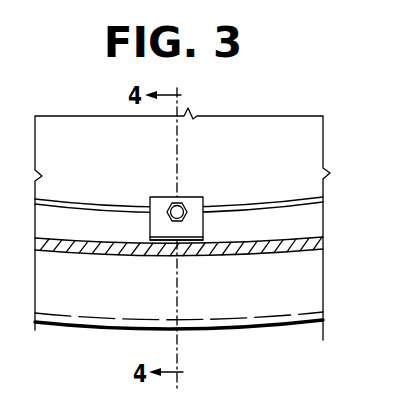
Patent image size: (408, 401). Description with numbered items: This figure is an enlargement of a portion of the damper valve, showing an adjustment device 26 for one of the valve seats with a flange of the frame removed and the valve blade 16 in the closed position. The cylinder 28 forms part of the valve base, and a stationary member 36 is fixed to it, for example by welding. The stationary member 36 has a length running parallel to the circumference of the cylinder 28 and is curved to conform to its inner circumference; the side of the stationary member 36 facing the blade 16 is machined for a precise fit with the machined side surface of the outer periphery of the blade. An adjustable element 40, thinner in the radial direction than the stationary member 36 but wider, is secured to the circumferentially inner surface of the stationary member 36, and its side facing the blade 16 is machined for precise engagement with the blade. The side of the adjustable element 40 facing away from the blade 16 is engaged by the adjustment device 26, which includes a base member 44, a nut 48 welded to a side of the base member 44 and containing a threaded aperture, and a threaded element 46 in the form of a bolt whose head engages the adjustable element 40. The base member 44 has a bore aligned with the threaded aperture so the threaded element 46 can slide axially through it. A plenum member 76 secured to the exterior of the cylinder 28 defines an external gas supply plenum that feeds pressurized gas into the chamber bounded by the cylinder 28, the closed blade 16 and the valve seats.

The valve blade 16 is at (254, 124).
The adjustment device 26 is at (149, 226).
The cylinder 28 is at (324, 241).
The stationary member 36 is at (83, 236).
The adjustable element 40 is at (218, 210).
The base member 44 is at (168, 232).
The threaded element 46 is at (187, 207).
The nut 48 is at (168, 207).
The plenum member 76 is at (317, 287).